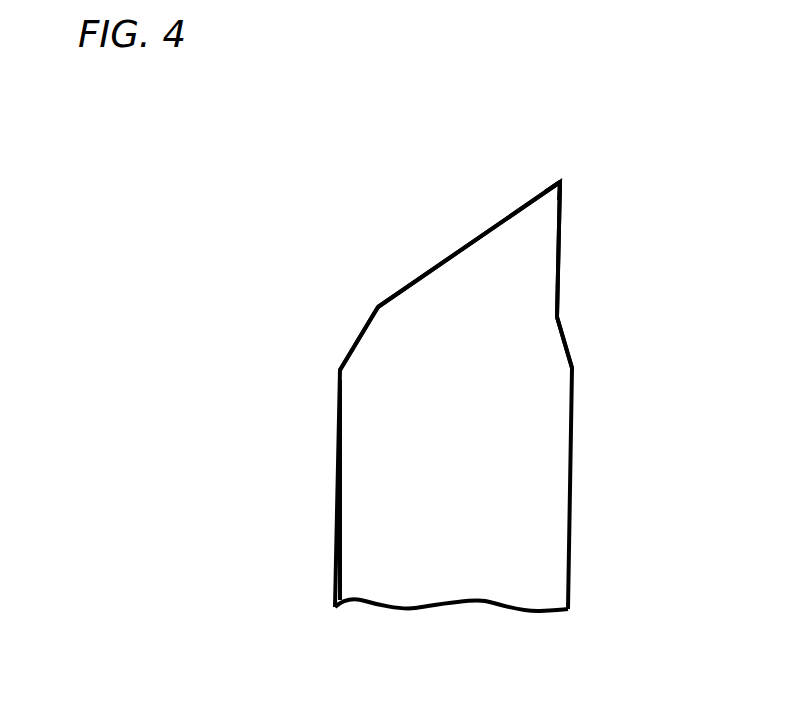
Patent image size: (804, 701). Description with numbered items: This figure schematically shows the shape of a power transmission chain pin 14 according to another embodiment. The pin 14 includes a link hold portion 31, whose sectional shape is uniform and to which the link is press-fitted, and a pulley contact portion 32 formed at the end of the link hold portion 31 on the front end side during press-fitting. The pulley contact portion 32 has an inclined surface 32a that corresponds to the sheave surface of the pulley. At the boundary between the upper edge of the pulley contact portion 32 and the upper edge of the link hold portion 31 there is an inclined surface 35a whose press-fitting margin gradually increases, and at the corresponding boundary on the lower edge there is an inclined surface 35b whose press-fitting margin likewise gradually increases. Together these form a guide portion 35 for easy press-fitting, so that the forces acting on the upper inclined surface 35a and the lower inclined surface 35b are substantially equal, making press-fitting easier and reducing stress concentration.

The pin 14 is at (570, 473).
The link hold portion 31 is at (532, 558).
The pulley contact portion 32 is at (487, 257).
The inclined surface 32a is at (533, 198).
The guide portion 35 is at (559, 258).
The inclined surface 35a is at (568, 350).
The inclined surface 35b is at (357, 340).